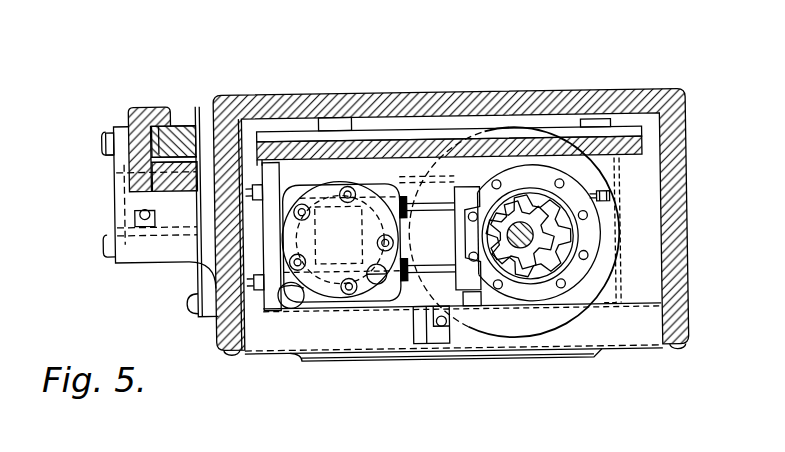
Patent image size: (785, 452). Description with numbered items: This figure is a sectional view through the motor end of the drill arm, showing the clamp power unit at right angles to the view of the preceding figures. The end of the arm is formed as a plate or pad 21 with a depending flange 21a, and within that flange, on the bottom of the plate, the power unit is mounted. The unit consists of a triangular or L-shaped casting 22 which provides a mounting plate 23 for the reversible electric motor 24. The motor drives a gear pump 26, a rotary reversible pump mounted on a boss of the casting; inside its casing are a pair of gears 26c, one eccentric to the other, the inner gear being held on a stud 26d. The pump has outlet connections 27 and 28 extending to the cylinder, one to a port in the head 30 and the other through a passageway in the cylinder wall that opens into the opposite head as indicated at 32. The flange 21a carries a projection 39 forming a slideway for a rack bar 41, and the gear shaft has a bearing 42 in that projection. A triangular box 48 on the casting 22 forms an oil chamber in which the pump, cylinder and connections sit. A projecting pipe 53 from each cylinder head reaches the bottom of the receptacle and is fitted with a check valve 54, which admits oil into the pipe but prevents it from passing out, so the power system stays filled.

The plate or pad 21 is at (418, 132).
The depending flange 21a is at (226, 330).
The L-shaped casting 22 is at (560, 140).
The mounting plate 23 is at (423, 340).
The reversible electric motor 24 is at (550, 300).
The gear pump 26 is at (583, 207).
The pair of gears 26c is at (532, 237).
The stud 26d is at (534, 262).
The outlet connection 27 is at (463, 190).
The outlet connection 28 is at (472, 292).
The cylinder head 30 is at (326, 300).
The passageway opening 32 is at (376, 283).
The projection 39 is at (157, 112).
The rack bar 41 is at (198, 117).
The bearing 42 is at (110, 240).
The triangular box 48 is at (340, 298).
The projecting pipe 53 is at (288, 300).
The check valve 54 is at (268, 306).